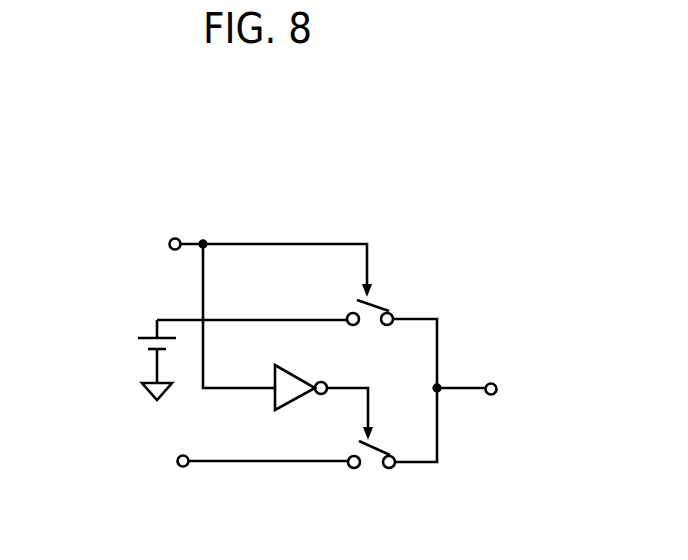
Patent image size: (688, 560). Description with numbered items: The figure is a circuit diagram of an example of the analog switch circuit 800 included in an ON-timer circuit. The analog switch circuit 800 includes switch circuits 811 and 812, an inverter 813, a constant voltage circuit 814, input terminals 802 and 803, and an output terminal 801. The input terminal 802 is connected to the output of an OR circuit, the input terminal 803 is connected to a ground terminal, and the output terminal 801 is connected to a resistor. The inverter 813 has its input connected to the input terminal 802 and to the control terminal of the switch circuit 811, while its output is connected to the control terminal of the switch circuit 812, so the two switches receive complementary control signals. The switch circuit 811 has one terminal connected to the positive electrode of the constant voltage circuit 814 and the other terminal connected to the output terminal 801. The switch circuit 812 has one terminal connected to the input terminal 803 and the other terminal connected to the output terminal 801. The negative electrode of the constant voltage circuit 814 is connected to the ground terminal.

The analog switch circuit 800 is at (285, 193).
The output terminal 801 is at (499, 391).
The input terminal 802 is at (147, 244).
The input terminal 803 is at (151, 462).
The switch circuit 811 is at (382, 300).
The switch circuit 812 is at (370, 470).
The inverter 813 is at (275, 405).
The constant voltage circuit 814 is at (145, 333).